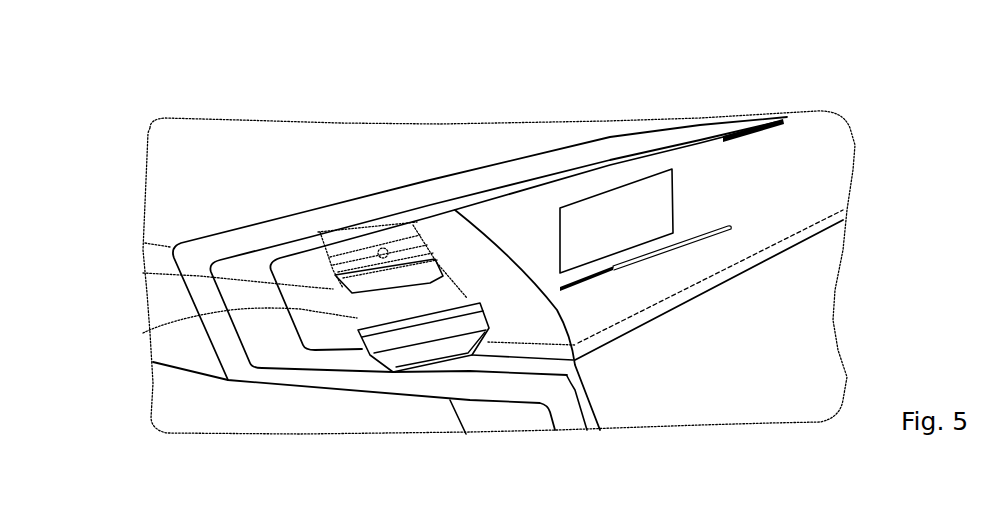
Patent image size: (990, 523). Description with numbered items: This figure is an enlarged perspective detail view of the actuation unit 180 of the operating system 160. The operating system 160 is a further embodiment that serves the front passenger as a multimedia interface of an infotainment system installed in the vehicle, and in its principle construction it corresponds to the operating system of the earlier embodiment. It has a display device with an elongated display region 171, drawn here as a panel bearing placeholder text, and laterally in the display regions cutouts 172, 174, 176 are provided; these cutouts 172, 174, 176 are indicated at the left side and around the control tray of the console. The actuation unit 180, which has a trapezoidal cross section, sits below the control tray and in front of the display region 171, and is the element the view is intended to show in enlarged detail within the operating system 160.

The operating system 160 is at (871, 160).
The elongated display region 171 is at (653, 178).
The cutout 172 is at (143, 333).
The cutout 174 is at (143, 273).
The cutout 176 is at (335, 274).
The actuation unit 180 is at (450, 317).